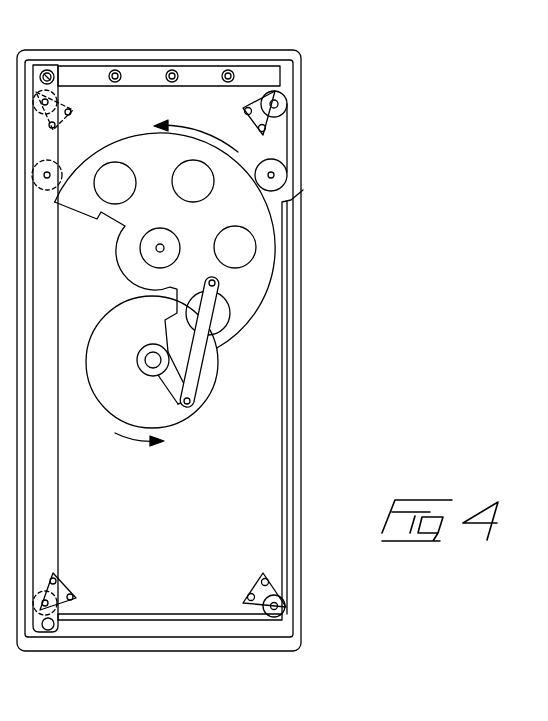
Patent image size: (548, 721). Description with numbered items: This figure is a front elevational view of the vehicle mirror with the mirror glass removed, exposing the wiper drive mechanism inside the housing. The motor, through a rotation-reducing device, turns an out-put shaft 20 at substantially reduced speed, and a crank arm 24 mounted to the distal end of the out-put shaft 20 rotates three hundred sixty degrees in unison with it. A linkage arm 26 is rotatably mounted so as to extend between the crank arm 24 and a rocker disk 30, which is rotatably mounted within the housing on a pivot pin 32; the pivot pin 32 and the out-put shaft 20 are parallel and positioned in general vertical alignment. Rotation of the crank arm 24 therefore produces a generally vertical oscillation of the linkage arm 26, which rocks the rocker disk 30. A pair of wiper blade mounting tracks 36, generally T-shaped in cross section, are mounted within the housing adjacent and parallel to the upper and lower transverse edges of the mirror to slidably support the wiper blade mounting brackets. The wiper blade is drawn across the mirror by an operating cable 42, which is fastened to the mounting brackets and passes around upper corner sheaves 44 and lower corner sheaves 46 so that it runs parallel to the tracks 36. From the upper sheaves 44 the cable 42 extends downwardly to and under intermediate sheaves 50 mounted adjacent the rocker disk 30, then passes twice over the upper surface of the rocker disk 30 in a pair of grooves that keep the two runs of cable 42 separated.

The out-put shaft 20 is at (152, 368).
The crank arm 24 is at (188, 408).
The linkage arm 26 is at (201, 342).
The rocker disk 30 is at (143, 204).
The pivot pin 32 is at (157, 250).
The wiper blade mounting track 36 is at (207, 78).
The operating cable 42 is at (288, 125).
The upper corner sheaves 44 is at (283, 95).
The lower corner sheaves 46 is at (276, 612).
The intermediate sheaves 50 is at (272, 174).